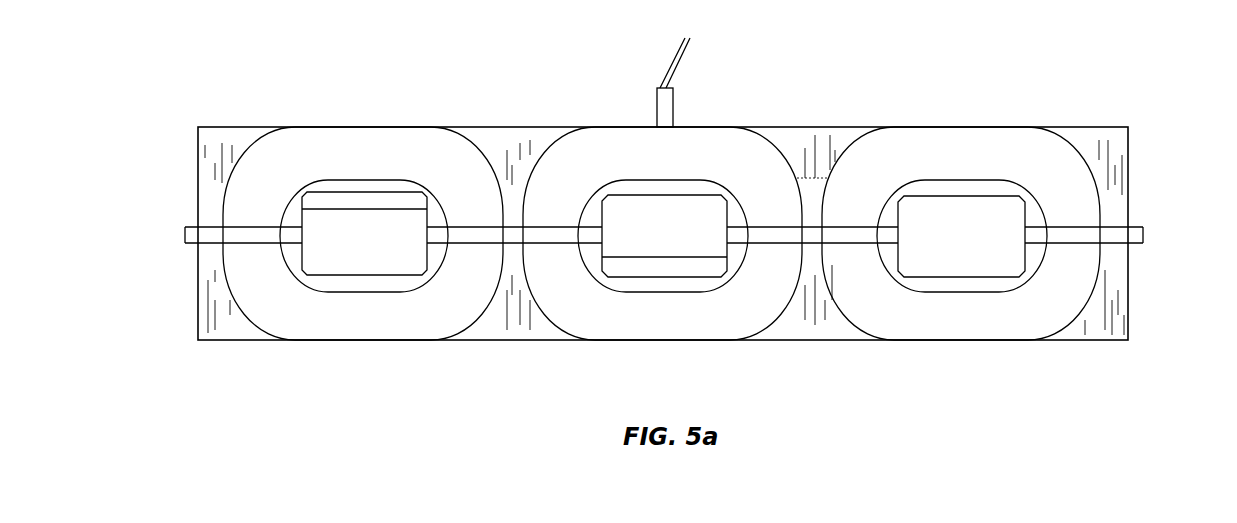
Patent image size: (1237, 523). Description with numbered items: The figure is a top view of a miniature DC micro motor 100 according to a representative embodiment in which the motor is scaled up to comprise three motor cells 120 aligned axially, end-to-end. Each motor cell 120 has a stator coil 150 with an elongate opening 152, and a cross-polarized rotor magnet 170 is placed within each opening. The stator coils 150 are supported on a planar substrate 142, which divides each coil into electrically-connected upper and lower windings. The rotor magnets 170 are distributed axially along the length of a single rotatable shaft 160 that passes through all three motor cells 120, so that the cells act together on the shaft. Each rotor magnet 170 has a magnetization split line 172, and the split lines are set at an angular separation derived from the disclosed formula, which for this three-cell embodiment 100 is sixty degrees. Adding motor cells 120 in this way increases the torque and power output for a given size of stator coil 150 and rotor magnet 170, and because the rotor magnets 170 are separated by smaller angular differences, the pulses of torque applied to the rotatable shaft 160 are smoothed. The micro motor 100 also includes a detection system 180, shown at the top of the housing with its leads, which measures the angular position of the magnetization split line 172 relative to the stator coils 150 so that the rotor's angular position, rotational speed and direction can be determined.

The micro motor 100 is at (1150, 128).
The motor cell 120 is at (336, 356).
The planar substrate 142 is at (197, 193).
The stator coil 150 is at (443, 167).
The elongate opening 152 is at (380, 282).
The rotatable shaft 160 is at (1127, 242).
The cross-polarized rotor magnet 170 is at (323, 267).
The magnetization split line 172 is at (353, 203).
The detection system 180 is at (670, 100).